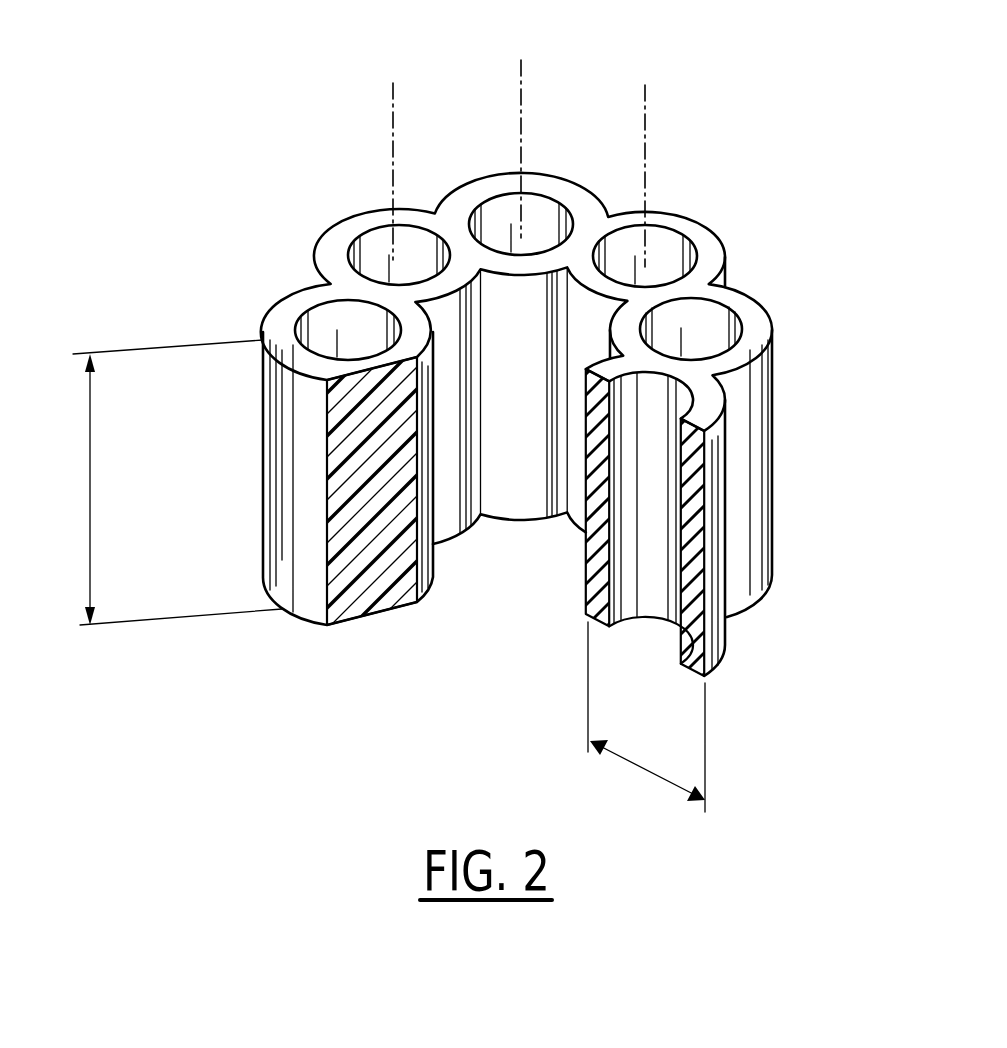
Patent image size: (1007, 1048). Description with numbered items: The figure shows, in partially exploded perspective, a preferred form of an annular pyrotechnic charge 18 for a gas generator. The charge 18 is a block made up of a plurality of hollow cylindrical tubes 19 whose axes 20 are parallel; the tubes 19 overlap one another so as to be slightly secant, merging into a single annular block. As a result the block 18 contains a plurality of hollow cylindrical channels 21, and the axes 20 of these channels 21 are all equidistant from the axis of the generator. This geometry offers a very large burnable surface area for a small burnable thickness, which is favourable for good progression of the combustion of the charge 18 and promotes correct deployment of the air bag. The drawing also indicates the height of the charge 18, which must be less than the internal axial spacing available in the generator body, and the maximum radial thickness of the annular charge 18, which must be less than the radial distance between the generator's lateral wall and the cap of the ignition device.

The charge 18 is at (256, 254).
The hollow cylindrical tubes 19 is at (282, 477).
The axes 20 is at (393, 97).
The hollow cylindrical channels 21 is at (378, 258).